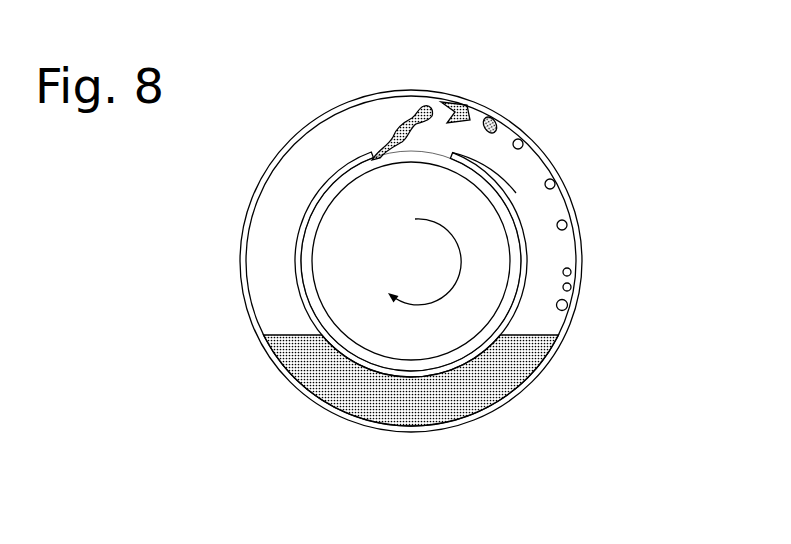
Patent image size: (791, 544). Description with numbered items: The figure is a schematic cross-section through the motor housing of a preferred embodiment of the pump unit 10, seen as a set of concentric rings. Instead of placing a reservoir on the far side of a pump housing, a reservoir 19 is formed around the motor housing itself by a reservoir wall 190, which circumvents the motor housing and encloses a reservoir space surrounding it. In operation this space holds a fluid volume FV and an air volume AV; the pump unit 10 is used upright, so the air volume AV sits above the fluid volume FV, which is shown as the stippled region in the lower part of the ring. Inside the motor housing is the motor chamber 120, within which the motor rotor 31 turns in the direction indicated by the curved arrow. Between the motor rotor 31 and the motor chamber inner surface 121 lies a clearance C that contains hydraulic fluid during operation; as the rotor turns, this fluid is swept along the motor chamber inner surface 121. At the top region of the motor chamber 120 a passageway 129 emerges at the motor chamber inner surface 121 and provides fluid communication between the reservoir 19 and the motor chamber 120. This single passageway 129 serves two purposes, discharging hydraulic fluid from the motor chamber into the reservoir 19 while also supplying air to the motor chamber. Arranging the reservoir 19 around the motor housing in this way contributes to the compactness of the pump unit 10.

The pump unit 10 is at (432, 268).
The reservoir 19 is at (542, 399).
The reservoir wall 190 is at (575, 310).
The motor chamber 120 is at (522, 255).
The motor chamber inner surface 121 is at (507, 188).
The passageway 129 is at (435, 153).
The motor rotor 31 is at (443, 325).
The air volume AV is at (288, 181).
The clearance C is at (310, 273).
The fluid volume FV is at (344, 383).